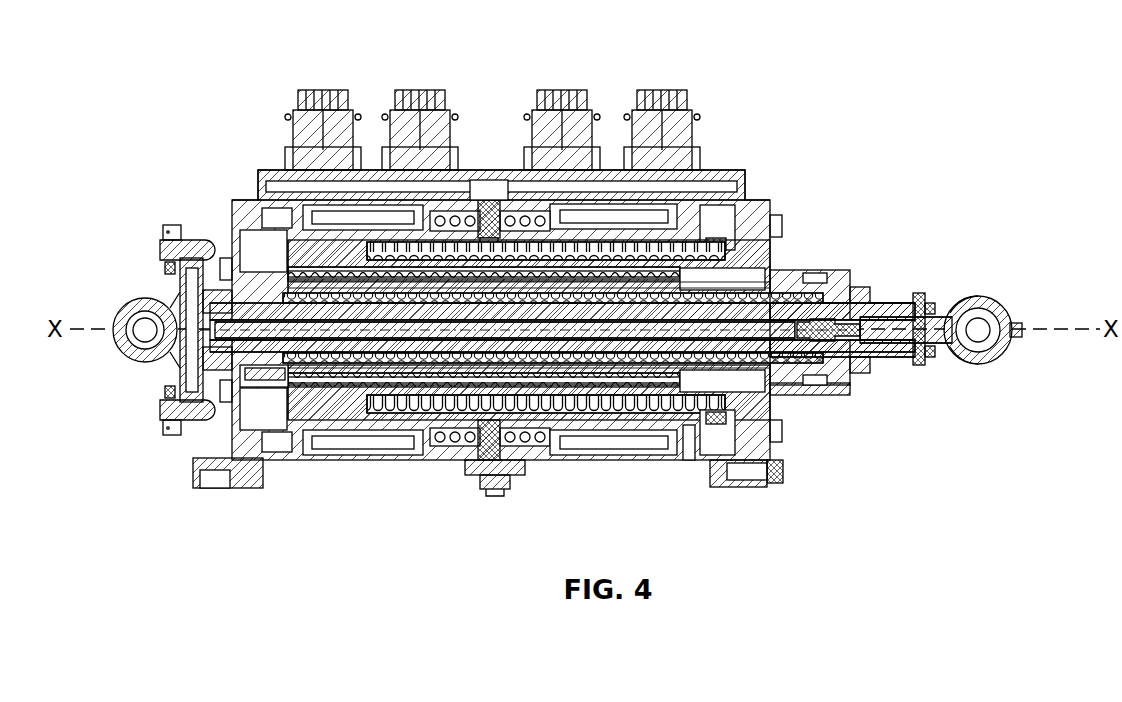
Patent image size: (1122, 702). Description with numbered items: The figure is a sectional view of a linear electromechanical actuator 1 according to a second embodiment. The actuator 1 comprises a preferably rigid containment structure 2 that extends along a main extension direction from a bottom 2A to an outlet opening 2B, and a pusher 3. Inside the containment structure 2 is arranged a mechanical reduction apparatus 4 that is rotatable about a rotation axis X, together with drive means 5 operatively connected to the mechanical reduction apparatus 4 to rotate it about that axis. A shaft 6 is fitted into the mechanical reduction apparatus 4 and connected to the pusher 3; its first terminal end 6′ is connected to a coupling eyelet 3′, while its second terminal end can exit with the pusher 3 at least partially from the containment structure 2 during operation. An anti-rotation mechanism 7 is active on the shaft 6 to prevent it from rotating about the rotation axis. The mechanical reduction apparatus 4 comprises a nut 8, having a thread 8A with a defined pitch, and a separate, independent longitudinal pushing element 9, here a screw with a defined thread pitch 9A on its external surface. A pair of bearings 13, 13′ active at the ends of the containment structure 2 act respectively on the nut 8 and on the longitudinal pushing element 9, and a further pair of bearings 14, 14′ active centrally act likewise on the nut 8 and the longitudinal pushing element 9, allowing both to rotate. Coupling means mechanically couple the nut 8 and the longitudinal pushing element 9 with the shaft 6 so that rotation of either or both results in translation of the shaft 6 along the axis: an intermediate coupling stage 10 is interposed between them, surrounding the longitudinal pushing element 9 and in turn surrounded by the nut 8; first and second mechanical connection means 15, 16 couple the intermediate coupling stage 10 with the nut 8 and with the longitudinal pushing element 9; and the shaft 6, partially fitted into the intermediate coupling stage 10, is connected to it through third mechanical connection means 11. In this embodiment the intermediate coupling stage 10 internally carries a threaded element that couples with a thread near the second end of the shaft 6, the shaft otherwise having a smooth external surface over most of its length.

The linear electromechanical actuator 1 is at (476, 235).
The containment structure 2 is at (280, 145).
The bottom 2A is at (219, 255).
The outlet opening 2B is at (773, 413).
The pusher 3 is at (1000, 297).
The coupling eyelet 3′ is at (935, 343).
The mechanical reduction apparatus 4 is at (555, 216).
The drive means 5 is at (370, 195).
The shaft 6 is at (726, 462).
The first terminal end 6′ is at (921, 366).
The anti-rotation mechanism 7 is at (857, 282).
The nut 8 is at (708, 397).
The thread 8A is at (618, 410).
The longitudinal pushing element 9 is at (296, 392).
The thread pitch 9A is at (335, 385).
The intermediate coupling stage 10 is at (424, 395).
The third mechanical connection means 11 is at (796, 285).
The bearing 13 is at (712, 238).
The bearing 13′ is at (330, 250).
The bearing 14 is at (515, 218).
The bearing 14′ is at (440, 215).
The first mechanical connection means 15 is at (488, 417).
The second mechanical connection means 16 is at (527, 440).